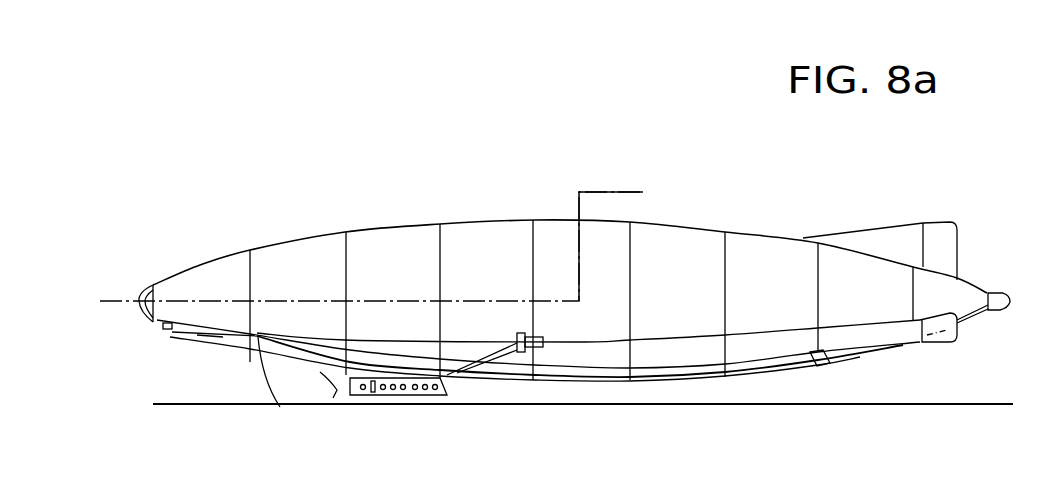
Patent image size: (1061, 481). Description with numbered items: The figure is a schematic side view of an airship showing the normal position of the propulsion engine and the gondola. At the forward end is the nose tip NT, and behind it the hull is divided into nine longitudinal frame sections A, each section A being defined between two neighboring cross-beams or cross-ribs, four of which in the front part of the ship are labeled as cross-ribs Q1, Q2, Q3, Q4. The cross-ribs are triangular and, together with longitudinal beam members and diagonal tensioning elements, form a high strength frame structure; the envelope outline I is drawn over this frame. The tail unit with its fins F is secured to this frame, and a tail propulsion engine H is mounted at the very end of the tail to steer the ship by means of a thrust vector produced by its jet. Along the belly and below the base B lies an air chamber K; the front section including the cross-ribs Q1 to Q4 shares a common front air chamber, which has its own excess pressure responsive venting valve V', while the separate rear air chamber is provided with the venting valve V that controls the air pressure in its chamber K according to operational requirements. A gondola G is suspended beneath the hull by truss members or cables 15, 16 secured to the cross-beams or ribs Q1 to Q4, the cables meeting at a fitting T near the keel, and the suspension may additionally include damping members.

The cross-beam or cross-rib Q1 is at (250, 262).
The cross-beam or cross-rib Q2 is at (347, 258).
The cross-beam or cross-rib Q3 is at (440, 237).
The cross-beam or cross-rib Q4 is at (533, 235).
The envelope I is at (477, 220).
The longitudinal frame section A is at (118, 290).
The fins F is at (882, 202).
The base B is at (346, 177).
The nose tip NT is at (143, 295).
The venting valve V' is at (190, 356).
The truss member or cable 15 is at (286, 387).
The gondola G is at (333, 398).
The truss member or cable 16 is at (520, 352).
The fitting T is at (528, 352).
The air chamber K is at (657, 368).
The venting valve V is at (883, 374).
The tail propulsion engine H is at (1000, 310).